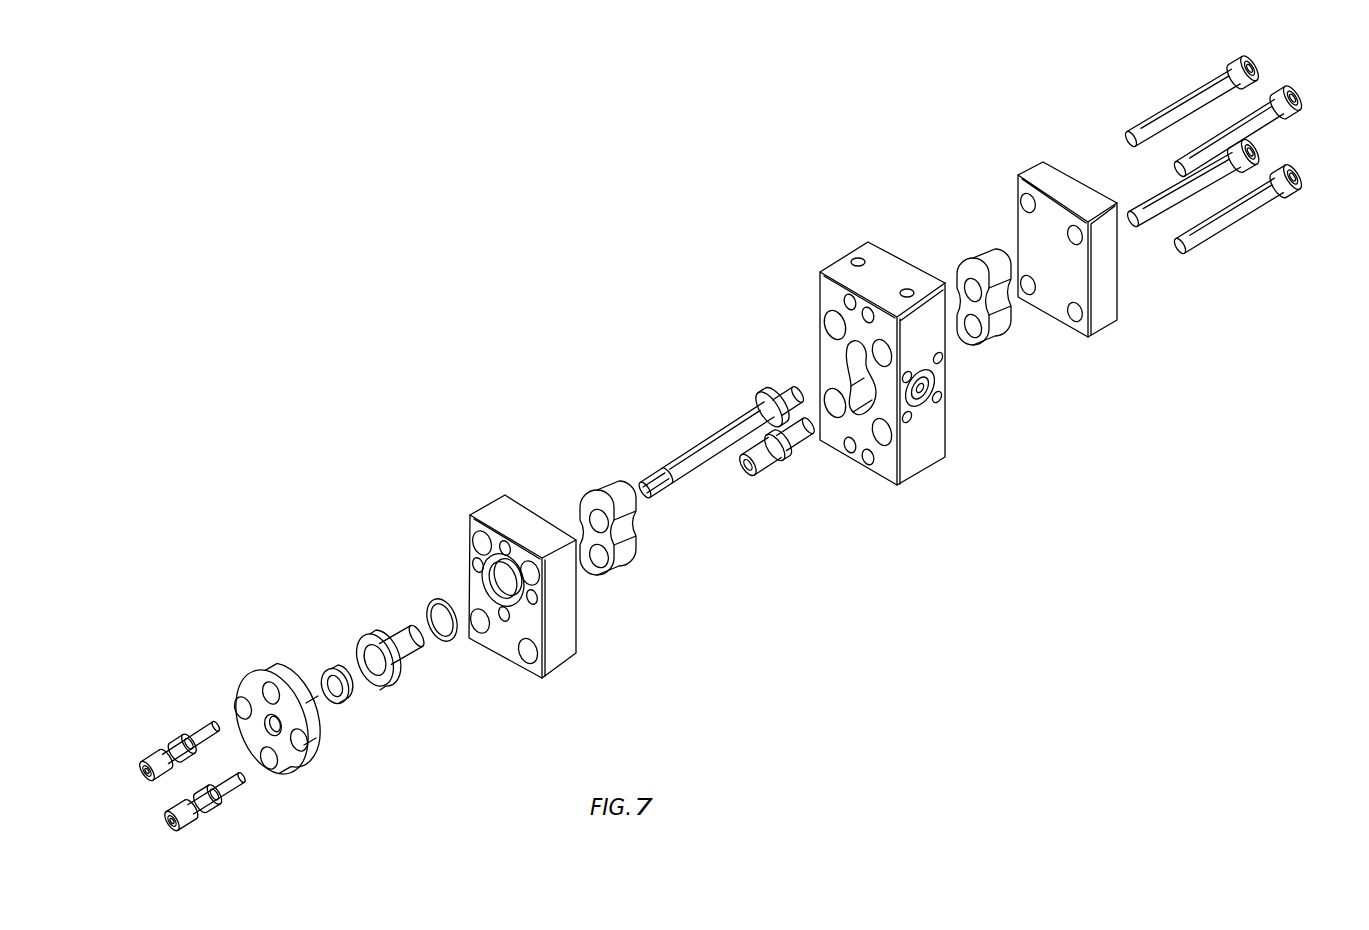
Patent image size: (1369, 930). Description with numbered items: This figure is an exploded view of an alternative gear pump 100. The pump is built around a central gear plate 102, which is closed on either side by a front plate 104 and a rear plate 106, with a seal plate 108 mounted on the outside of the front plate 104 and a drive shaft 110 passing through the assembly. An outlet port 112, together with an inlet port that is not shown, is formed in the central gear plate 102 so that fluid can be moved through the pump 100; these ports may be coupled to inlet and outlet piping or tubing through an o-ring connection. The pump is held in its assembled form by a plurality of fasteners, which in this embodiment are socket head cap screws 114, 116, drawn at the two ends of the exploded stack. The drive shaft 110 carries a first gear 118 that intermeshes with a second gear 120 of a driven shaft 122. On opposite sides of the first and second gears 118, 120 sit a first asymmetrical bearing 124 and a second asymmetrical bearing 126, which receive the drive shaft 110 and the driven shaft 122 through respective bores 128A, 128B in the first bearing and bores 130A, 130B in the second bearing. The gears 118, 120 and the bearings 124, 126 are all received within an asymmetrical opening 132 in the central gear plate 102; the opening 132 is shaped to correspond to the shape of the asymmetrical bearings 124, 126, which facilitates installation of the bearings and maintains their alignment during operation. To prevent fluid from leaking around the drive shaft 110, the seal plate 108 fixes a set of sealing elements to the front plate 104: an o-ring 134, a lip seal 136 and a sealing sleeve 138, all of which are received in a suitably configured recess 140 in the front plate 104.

The gear pump 100 is at (557, 347).
The central gear plate 102 is at (890, 407).
The front plate 104 is at (490, 628).
The rear plate 106 is at (1108, 332).
The seal plate 108 is at (307, 768).
The drive shaft 110 is at (758, 462).
The outlet port 112 is at (928, 403).
The socket head cap screws 114 is at (243, 793).
The socket head cap screws 116 is at (1238, 233).
The first gear 118 is at (773, 392).
The second gear 120 is at (791, 471).
The driven shaft 122 is at (765, 458).
The first asymmetrical bearing 124 is at (609, 555).
The second asymmetrical bearing 126 is at (973, 273).
The bore 128A is at (598, 520).
The bore 128B is at (584, 547).
The bore 130A is at (987, 305).
The bore 130B is at (962, 315).
The asymmetrical opening 132 is at (855, 358).
The o-ring 134 is at (460, 650).
The lip seal 136 is at (348, 708).
The sealing sleeve 138 is at (393, 692).
The recess 140 is at (502, 573).